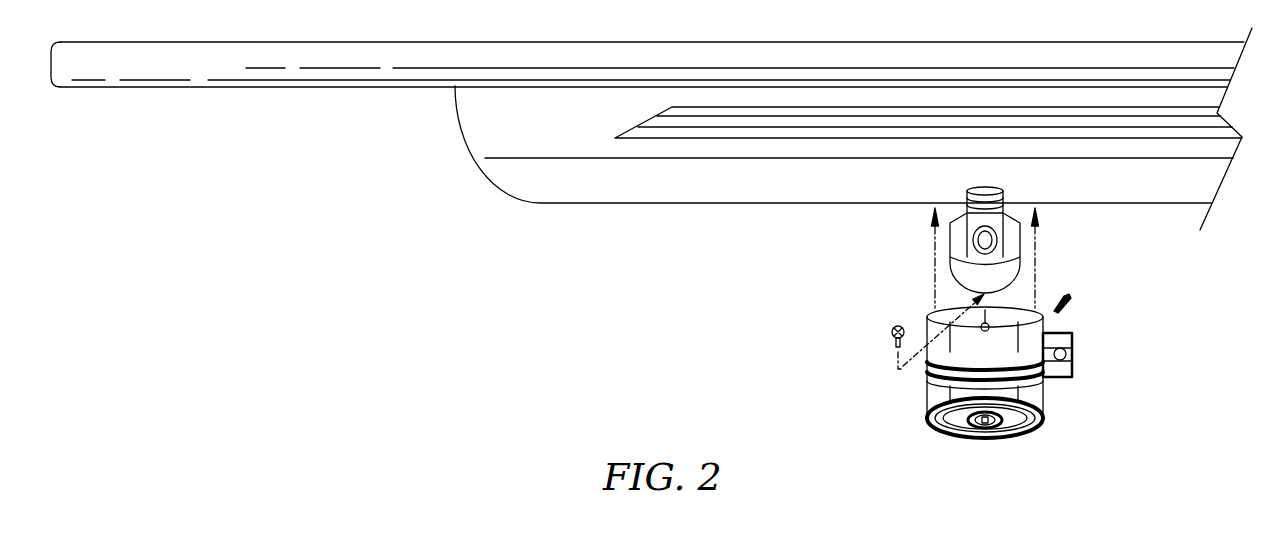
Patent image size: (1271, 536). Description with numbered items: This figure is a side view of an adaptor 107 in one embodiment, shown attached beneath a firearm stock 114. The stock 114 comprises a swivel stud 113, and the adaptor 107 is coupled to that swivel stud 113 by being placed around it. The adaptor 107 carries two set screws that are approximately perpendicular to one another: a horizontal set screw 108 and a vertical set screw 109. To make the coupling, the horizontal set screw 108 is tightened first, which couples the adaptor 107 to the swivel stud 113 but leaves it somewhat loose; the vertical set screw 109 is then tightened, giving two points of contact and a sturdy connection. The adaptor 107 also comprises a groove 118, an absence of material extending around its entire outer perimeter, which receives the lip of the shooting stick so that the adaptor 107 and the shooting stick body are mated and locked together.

The adaptor 107 is at (1070, 298).
The horizontal set screw 108 is at (895, 326).
The vertical set screw 109 is at (1000, 428).
The swivel stud 113 is at (960, 241).
The stock 114 is at (787, 204).
The groove 118 is at (1043, 385).